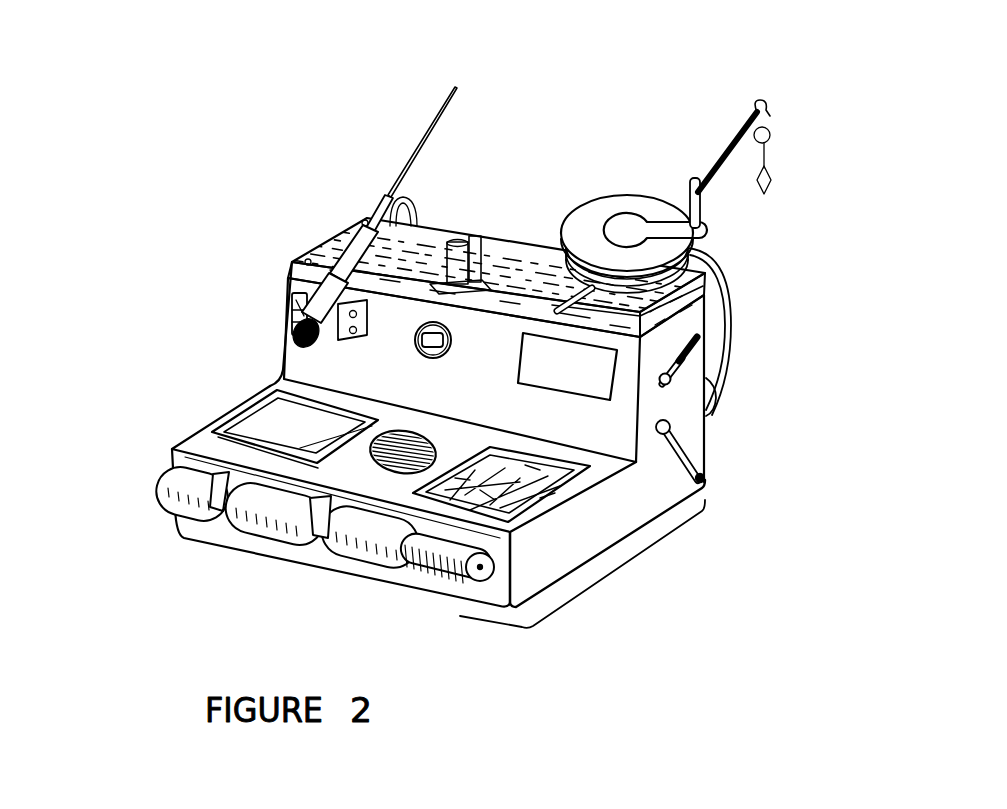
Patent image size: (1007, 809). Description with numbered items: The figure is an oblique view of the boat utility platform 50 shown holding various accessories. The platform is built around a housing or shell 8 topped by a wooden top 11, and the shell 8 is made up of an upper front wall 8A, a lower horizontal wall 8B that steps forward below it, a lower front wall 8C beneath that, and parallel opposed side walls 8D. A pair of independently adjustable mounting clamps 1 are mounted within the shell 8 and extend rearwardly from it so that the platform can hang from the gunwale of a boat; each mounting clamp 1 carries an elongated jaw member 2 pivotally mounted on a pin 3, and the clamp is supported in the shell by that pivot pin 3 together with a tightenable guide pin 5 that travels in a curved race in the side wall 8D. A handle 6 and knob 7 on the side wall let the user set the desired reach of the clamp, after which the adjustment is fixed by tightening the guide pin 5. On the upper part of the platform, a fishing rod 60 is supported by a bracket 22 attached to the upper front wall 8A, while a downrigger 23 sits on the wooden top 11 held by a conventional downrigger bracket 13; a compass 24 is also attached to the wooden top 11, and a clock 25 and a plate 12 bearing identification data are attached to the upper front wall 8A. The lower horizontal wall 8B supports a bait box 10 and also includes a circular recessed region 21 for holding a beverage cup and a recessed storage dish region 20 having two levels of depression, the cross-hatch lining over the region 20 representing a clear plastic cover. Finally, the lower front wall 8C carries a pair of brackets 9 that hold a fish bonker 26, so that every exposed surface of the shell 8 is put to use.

The mounting clamp 1 is at (759, 330).
The jaw member 2 is at (768, 380).
The pin 3 is at (764, 519).
The guide pin 5 is at (745, 343).
The handle 6 is at (748, 476).
The knob 7 is at (744, 454).
The housing or shell 8 is at (592, 461).
The upper front wall 8A is at (413, 370).
The lower horizontal wall 8B is at (298, 400).
The lower front wall 8C is at (341, 568).
The side wall 8D is at (560, 609).
The brackets 9 is at (226, 546).
The bait box 10 is at (308, 435).
The wooden top 11 is at (429, 250).
The plate 12 is at (578, 383).
The downrigger bracket 13 is at (527, 229).
The recessed storage dish region 20 is at (579, 554).
The circular recessed region 21 is at (384, 416).
The bracket 22 is at (264, 275).
The downrigger 23 is at (618, 215).
The compass 24 is at (469, 238).
The clock 25 is at (451, 364).
The fish bonker 26 is at (308, 563).
The boat utility platform 50 is at (255, 302).
The fishing rod 60 is at (372, 210).